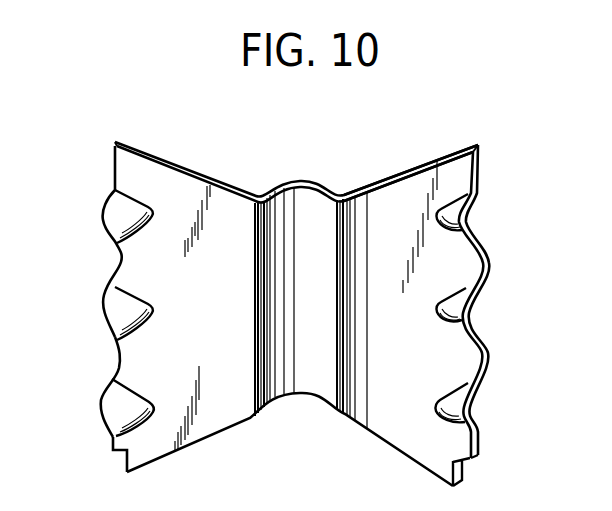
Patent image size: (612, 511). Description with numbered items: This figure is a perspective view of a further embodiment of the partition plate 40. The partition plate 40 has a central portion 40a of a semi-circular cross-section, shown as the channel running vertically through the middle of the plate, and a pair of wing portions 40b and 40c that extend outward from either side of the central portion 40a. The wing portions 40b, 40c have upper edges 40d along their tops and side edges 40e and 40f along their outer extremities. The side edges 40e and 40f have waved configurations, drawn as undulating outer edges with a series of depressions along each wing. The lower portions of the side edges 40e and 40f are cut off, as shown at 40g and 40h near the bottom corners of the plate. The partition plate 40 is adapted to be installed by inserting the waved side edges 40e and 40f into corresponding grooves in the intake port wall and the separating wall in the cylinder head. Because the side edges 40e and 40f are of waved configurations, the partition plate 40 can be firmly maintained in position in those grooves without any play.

The partition plate 40 is at (268, 186).
The central portion 40a is at (320, 215).
The wing portion 40b is at (453, 173).
The wing portion 40c is at (133, 257).
The upper edges 40d is at (435, 164).
The side edge 40e is at (470, 358).
The side edge 40f is at (133, 344).
The cut-off 40g is at (462, 470).
The cut-off 40h is at (125, 467).